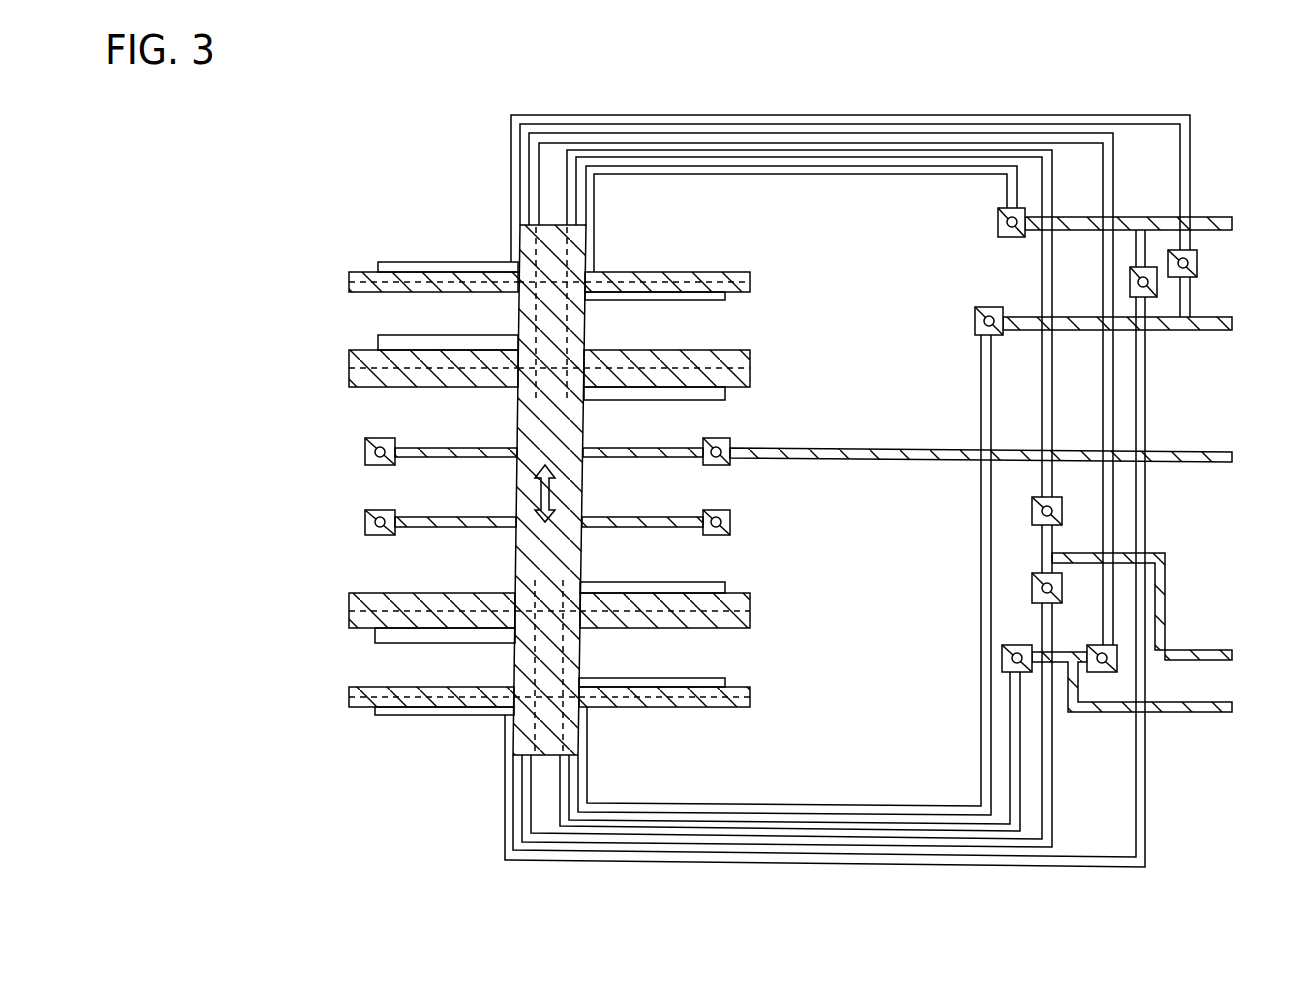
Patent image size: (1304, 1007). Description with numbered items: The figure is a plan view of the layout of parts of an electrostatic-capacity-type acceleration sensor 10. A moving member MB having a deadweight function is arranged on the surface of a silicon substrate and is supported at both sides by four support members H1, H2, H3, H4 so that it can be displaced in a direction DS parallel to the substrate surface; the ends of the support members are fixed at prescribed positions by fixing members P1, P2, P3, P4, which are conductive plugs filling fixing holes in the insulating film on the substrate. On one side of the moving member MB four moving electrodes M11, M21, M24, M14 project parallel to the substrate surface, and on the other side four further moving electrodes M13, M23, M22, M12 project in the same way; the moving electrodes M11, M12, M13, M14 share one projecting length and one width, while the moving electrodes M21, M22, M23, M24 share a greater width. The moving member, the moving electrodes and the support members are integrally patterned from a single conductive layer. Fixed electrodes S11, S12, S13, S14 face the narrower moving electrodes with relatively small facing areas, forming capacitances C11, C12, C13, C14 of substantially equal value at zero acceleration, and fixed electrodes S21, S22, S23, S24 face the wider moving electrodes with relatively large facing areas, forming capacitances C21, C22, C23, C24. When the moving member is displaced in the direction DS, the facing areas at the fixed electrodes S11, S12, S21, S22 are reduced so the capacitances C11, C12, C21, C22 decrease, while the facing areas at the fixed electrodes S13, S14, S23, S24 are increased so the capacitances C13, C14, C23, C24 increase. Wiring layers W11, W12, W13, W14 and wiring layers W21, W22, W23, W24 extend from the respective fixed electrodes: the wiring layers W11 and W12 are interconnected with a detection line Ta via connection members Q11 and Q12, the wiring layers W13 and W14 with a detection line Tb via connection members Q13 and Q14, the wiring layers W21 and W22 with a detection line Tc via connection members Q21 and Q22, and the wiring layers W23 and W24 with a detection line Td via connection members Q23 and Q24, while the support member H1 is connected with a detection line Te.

The electrostatic-capacity-type acceleration sensor 10 is at (407, 162).
The moving member MB is at (523, 567).
The moving electrode M11 is at (738, 273).
The moving electrode M12 is at (350, 707).
The moving electrode M13 is at (368, 273).
The moving electrode M14 is at (725, 710).
The moving electrode M21 is at (740, 377).
The moving electrode M22 is at (362, 598).
The moving electrode M23 is at (358, 357).
The moving electrode M24 is at (755, 607).
The fixed electrode S11 is at (725, 296).
The fixed electrode S12 is at (440, 718).
The fixed electrode S13 is at (435, 262).
The fixed electrode S14 is at (722, 683).
The fixed electrode S21 is at (727, 398).
The fixed electrode S22 is at (453, 638).
The fixed electrode S23 is at (448, 343).
The fixed electrode S24 is at (720, 583).
The capacitance C11 is at (730, 277).
The capacitance C12 is at (410, 753).
The capacitance C13 is at (379, 249).
The capacitance C14 is at (730, 706).
The capacitance C21 is at (741, 394).
The capacitance C22 is at (389, 616).
The capacitance C23 is at (382, 340).
The capacitance C24 is at (730, 580).
The support member H1 is at (636, 448).
The support member H2 is at (458, 448).
The support member H3 is at (680, 517).
The support member H4 is at (462, 517).
The fixing member P1 is at (748, 441).
The fixing member P2 is at (366, 448).
The fixing member P3 is at (730, 518).
The fixing member P4 is at (366, 520).
The direction of displacement DS is at (552, 494).
The wiring layer W11 is at (952, 178).
The wiring layer W12 is at (1072, 870).
The wiring layer W13 is at (617, 117).
The wiring layer W14 is at (640, 803).
The wiring layer W21 is at (883, 156).
The wiring layer W22 is at (905, 862).
The wiring layer W23 is at (729, 137).
The wiring layer W24 is at (712, 826).
The connection member Q11 is at (997, 236).
The connection member Q12 is at (1130, 285).
The connection member Q13 is at (1200, 263).
The connection member Q14 is at (975, 320).
The connection member Q21 is at (1046, 497).
The connection member Q22 is at (1035, 588).
The connection member Q23 is at (1120, 662).
The connection member Q24 is at (1003, 655).
The detection line Ta is at (1203, 218).
The detection line Tb is at (1232, 322).
The detection line Tc is at (1233, 657).
The detection line Td is at (1232, 707).
The detection line Te is at (1218, 447).